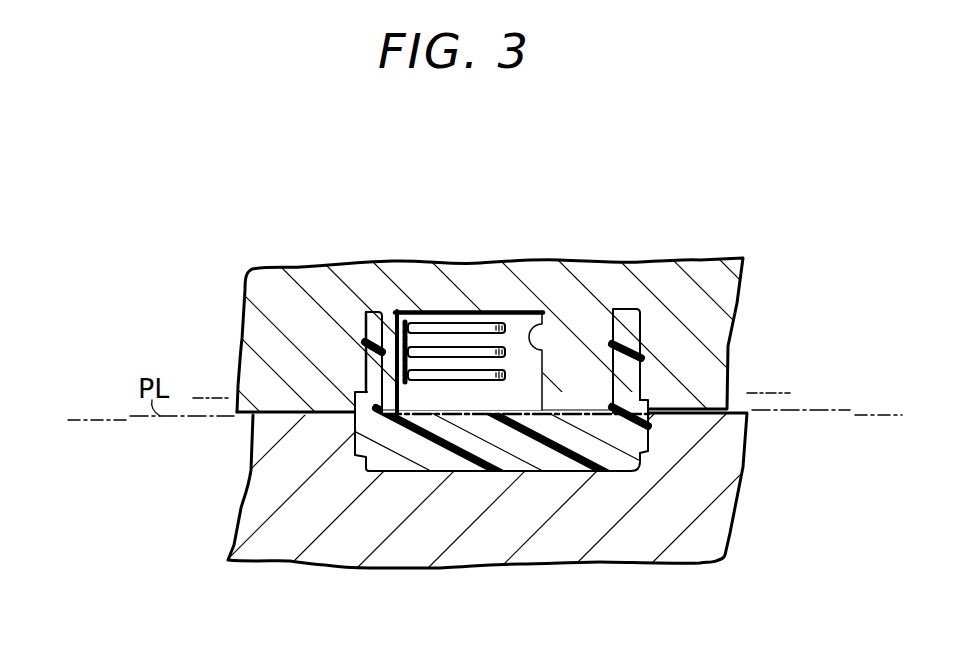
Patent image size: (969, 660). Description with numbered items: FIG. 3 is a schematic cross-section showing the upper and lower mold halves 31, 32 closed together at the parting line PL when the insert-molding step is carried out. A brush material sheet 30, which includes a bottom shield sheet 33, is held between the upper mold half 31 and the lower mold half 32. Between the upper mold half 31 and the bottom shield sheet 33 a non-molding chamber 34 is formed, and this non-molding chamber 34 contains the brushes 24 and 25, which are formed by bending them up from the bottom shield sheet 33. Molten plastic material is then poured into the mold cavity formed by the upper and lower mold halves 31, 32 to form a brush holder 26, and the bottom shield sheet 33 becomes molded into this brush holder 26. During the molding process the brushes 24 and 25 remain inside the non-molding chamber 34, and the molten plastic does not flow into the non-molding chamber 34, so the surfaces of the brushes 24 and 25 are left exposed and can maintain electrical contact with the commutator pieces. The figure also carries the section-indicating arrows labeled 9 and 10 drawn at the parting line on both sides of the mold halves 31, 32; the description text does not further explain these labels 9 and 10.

The section line IX 9 is at (202, 382).
The section line X 10 is at (92, 404).
The brush 24 is at (489, 303).
The brush 25 is at (447, 325).
The brush holder 26 is at (437, 425).
The brush material sheet 30 is at (377, 474).
The upper mold half 31 is at (670, 284).
The lower mold half 32 is at (634, 545).
The bottom shield sheet 33 is at (522, 412).
The non-molding chamber 34 is at (548, 314).